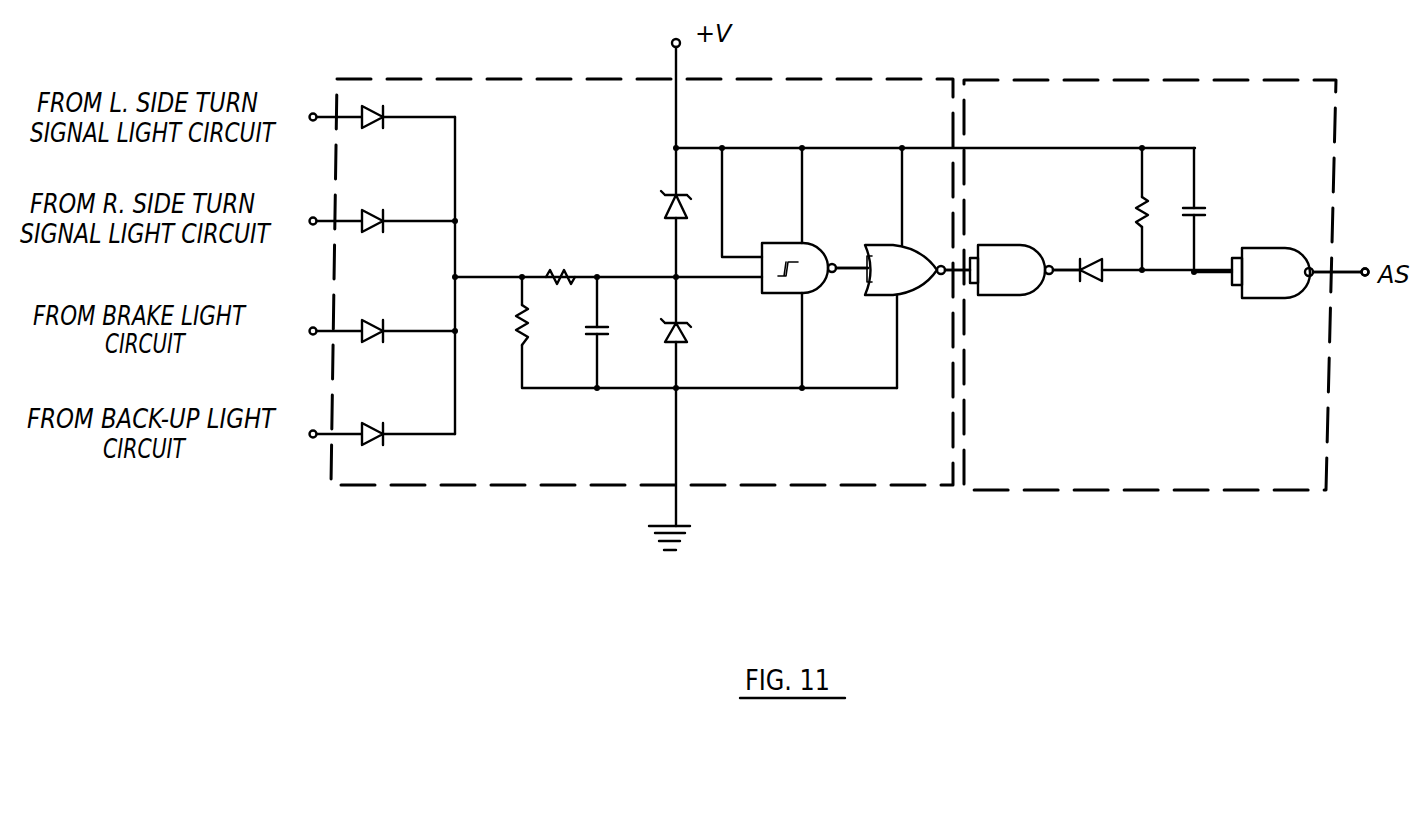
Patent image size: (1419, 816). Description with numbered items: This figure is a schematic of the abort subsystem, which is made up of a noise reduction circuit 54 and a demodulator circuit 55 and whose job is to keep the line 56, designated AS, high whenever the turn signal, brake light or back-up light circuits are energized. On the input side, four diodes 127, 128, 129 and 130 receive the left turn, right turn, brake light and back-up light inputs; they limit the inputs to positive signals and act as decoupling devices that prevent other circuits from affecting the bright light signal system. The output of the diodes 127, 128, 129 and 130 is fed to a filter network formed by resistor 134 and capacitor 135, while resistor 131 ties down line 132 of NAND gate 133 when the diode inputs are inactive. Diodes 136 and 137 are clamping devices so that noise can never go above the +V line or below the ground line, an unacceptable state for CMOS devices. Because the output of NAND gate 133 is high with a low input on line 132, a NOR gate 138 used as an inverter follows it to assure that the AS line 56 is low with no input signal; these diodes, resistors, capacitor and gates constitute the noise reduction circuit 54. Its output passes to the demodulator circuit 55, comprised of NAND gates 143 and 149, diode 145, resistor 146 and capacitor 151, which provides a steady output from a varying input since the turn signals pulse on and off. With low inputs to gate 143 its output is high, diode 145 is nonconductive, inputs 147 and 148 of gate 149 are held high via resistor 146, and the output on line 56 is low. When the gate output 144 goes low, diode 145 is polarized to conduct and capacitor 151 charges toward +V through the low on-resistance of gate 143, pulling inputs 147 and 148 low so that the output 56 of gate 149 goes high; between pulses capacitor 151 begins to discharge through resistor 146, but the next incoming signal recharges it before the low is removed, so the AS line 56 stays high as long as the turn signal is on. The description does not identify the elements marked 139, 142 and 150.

The noise reduction circuit 54 is at (537, 487).
The demodulator circuit 55 is at (1112, 492).
The AS line 56 is at (1340, 282).
The diode 127 is at (392, 110).
The diode 128 is at (385, 212).
The diode 129 is at (382, 325).
The diode 130 is at (377, 425).
The resistor 131 is at (518, 334).
The line 132 is at (748, 288).
The NAND gate 133 is at (790, 243).
The resistor 134 is at (565, 273).
The capacitor 135 is at (605, 340).
The diode 136 is at (672, 197).
The diode 137 is at (690, 346).
The NOR gate 138 is at (890, 245).
The gate input connection 139 is at (848, 272).
The gate input line 142 is at (975, 282).
The NAND gate 143 is at (996, 245).
The NAND gate output 144 is at (1067, 272).
The diode 145 is at (1100, 282).
The resistor 146 is at (1133, 205).
The input 147 is at (1238, 262).
The input 148 is at (1238, 287).
The NAND gate 149 is at (1248, 250).
The gate input element 150 is at (975, 260).
The capacitor 151 is at (1198, 208).